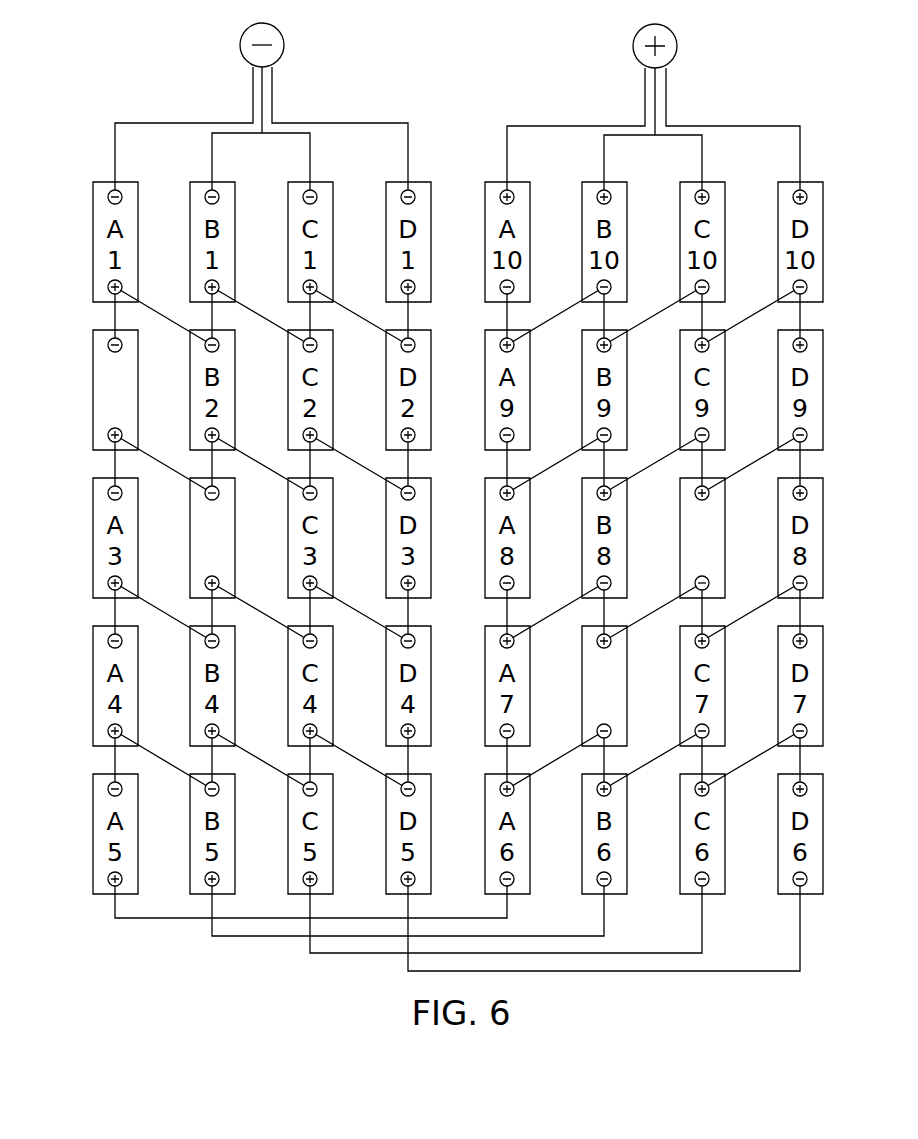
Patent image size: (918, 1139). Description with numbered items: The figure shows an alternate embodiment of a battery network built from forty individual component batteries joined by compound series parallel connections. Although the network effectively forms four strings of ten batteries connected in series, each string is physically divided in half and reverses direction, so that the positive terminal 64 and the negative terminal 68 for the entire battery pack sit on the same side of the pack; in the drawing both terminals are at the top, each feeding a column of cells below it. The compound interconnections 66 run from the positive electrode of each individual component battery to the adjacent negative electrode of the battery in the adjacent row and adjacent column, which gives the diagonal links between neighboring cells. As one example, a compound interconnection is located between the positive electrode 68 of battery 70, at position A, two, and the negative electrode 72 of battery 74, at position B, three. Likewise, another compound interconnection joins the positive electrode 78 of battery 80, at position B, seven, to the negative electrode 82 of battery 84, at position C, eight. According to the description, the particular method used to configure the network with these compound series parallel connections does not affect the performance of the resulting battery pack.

The positive terminal 64 is at (671, 32).
The compound interconnections 66 is at (362, 761).
The negative terminal 68 is at (280, 30).
The battery 70 is at (93, 392).
The negative electrode 72 is at (205, 497).
The battery 74 is at (230, 543).
The positive electrode 78 is at (611, 646).
The battery 80 is at (582, 683).
The negative electrode 82 is at (709, 584).
The battery 84 is at (722, 538).